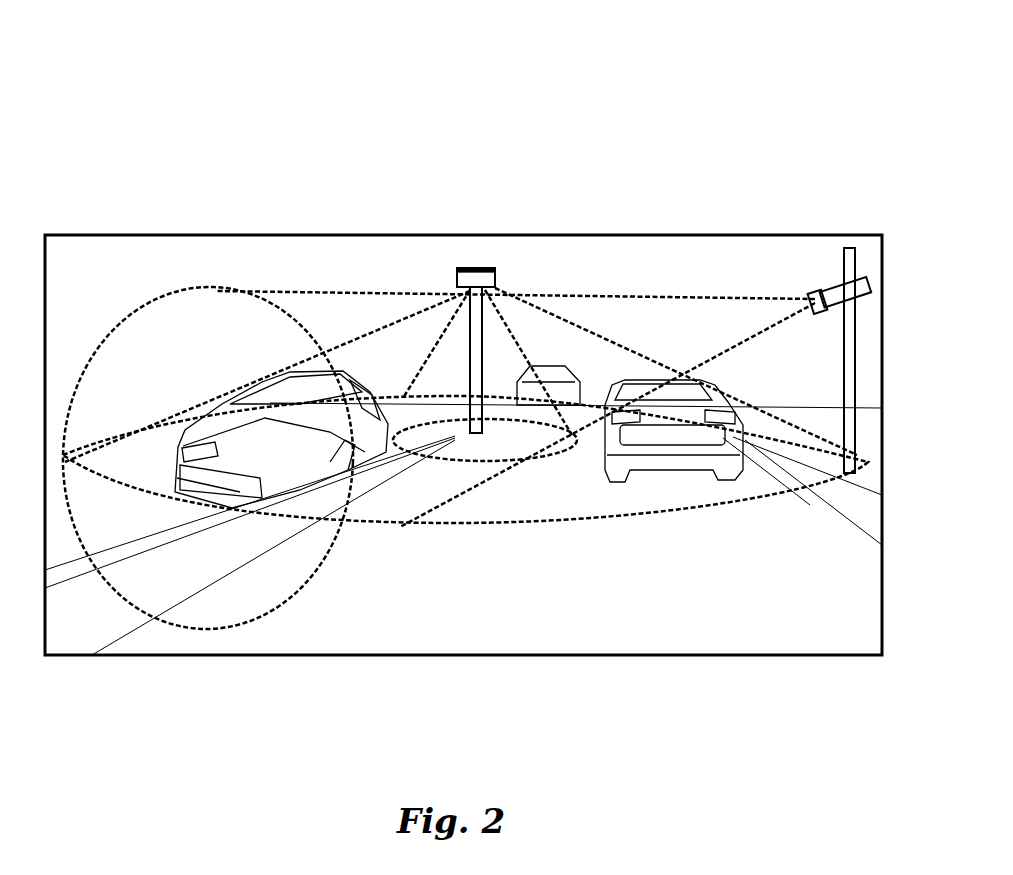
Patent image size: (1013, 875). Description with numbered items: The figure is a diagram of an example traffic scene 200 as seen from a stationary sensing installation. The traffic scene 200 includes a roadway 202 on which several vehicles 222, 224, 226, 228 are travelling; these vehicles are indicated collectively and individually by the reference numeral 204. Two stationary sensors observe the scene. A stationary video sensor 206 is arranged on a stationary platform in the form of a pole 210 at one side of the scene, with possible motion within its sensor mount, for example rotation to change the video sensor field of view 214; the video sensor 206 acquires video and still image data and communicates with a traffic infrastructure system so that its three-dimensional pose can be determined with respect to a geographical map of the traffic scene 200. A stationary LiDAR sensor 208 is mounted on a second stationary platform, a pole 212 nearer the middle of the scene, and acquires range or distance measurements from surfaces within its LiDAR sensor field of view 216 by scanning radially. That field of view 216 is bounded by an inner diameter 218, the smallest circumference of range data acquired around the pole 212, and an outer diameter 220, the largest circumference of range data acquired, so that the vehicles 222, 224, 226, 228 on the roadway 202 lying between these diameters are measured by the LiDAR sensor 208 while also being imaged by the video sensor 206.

The traffic scene 200 is at (474, 25).
The roadway 202 is at (442, 612).
The vehicles 204 is at (533, 268).
The stationary video sensor 206 is at (870, 290).
The stationary LiDAR sensor 208 is at (468, 268).
The pole 210 is at (857, 355).
The pole 212 is at (472, 363).
The video sensor field of view 214 is at (157, 580).
The LiDAR sensor field of view 216 is at (635, 495).
The inner diameter 218 is at (455, 462).
The outer diameter 220 is at (405, 527).
The vehicle 222 is at (190, 444).
The vehicle 224 is at (290, 387).
The vehicle 226 is at (560, 370).
The vehicle 228 is at (653, 377).